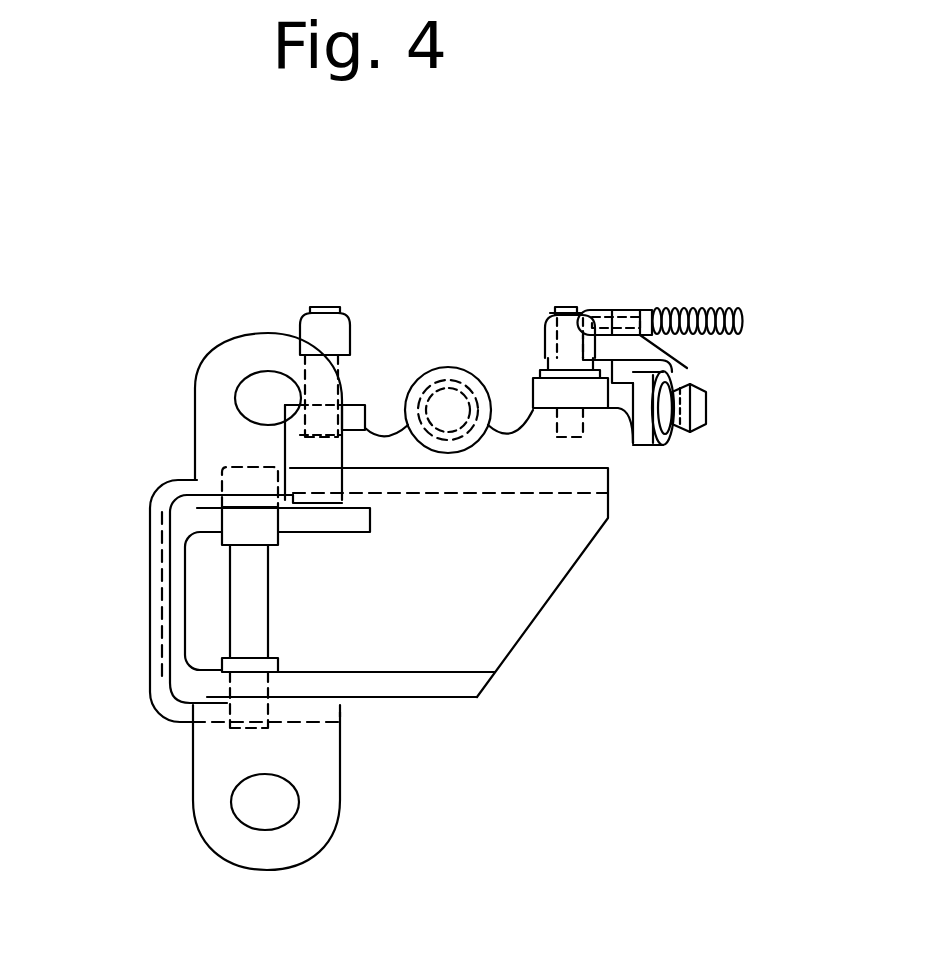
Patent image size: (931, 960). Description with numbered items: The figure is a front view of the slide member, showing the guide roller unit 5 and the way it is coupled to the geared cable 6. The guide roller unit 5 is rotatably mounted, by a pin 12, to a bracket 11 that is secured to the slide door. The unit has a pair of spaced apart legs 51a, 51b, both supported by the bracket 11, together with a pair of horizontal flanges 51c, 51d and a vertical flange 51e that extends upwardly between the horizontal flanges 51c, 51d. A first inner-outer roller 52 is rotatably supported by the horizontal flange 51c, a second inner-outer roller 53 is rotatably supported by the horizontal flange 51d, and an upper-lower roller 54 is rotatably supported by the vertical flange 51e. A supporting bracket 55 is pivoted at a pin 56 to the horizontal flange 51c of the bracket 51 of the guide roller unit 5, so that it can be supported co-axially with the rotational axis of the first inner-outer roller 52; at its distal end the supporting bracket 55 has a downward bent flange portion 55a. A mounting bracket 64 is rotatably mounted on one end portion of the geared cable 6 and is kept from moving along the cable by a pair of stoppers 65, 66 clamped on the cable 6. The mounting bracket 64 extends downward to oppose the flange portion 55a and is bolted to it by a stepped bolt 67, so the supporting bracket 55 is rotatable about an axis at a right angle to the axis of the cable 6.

The guide roller unit 5 is at (186, 378).
The geared cable 6 is at (707, 308).
The bracket 11 is at (157, 672).
The pin 12 is at (243, 613).
The bracket 51 is at (428, 494).
The leg 51a is at (370, 522).
The leg 51b is at (425, 697).
The horizontal flange 51c is at (532, 413).
The horizontal flange 51d is at (367, 403).
The vertical flange 51e is at (423, 387).
The first inner-outer roller 52 is at (546, 320).
The second inner-outer roller 53 is at (300, 323).
The upper-lower roller 54 is at (452, 367).
The supporting bracket 55 is at (616, 397).
The downward bent flange portion 55a is at (625, 448).
The pin 56 is at (575, 307).
The mounting bracket 64 is at (653, 447).
The stopper 65 is at (596, 309).
The stopper 66 is at (650, 309).
The stepped bolt 67 is at (707, 415).